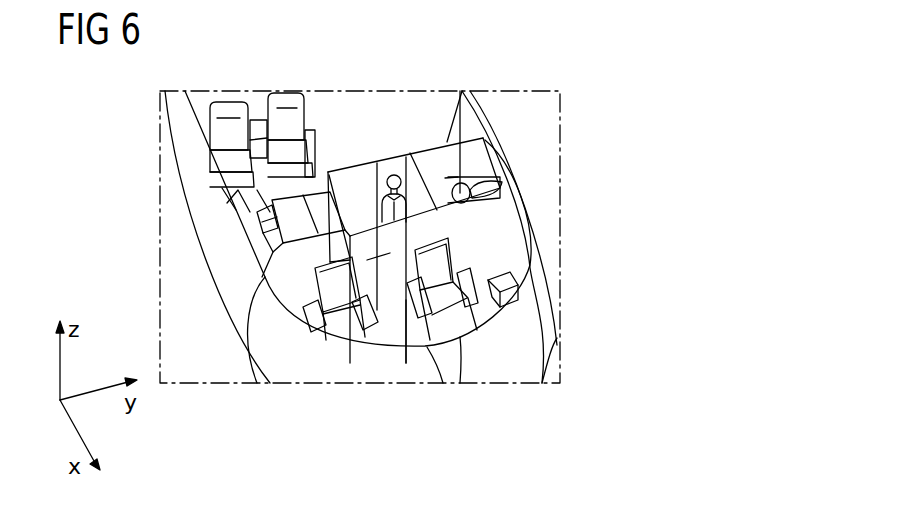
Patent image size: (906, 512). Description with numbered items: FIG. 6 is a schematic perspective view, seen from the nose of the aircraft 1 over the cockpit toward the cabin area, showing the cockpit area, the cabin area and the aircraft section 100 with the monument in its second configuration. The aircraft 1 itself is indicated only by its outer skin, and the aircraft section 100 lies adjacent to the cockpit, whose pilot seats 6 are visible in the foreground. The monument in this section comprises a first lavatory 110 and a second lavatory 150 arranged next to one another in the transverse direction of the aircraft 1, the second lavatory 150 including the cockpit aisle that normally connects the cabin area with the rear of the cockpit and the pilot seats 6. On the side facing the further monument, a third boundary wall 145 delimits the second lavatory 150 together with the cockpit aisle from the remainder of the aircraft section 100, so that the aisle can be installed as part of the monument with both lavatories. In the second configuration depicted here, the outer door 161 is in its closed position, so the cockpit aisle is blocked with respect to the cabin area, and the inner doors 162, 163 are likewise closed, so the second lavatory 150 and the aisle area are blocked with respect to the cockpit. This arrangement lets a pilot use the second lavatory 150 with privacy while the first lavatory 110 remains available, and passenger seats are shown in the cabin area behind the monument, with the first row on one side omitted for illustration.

The aircraft 1 is at (560, 358).
The pilot seats 6 is at (363, 280).
The aircraft section 100 is at (523, 120).
The first lavatory 110 is at (448, 131).
The third boundary wall 145 is at (330, 188).
The second lavatory 150 is at (384, 133).
The outer door 161 is at (342, 180).
The inner door 162 is at (397, 290).
The inner door 163 is at (340, 325).